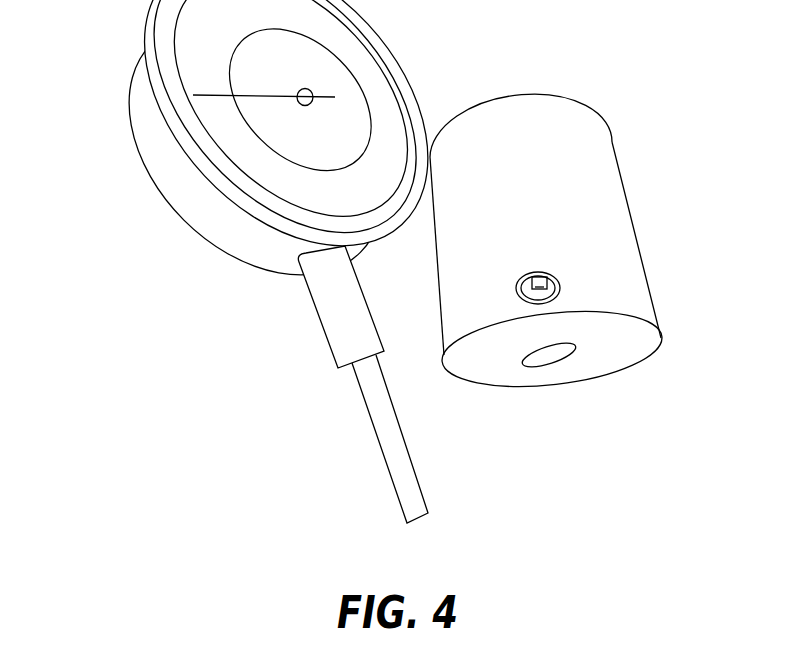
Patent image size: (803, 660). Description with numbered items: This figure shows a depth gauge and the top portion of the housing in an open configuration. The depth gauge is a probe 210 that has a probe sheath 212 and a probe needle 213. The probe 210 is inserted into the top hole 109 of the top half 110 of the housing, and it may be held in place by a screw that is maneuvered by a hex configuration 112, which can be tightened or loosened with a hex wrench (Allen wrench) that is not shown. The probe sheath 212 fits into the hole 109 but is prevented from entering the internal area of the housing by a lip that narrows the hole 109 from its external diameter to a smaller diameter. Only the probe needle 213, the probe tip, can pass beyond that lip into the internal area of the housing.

The top half 110 is at (610, 277).
The top hole 109 is at (577, 352).
The hex configuration 112 is at (545, 272).
The probe 210 is at (188, 138).
The probe sheath 212 is at (338, 323).
The probe needle 213 is at (385, 428).